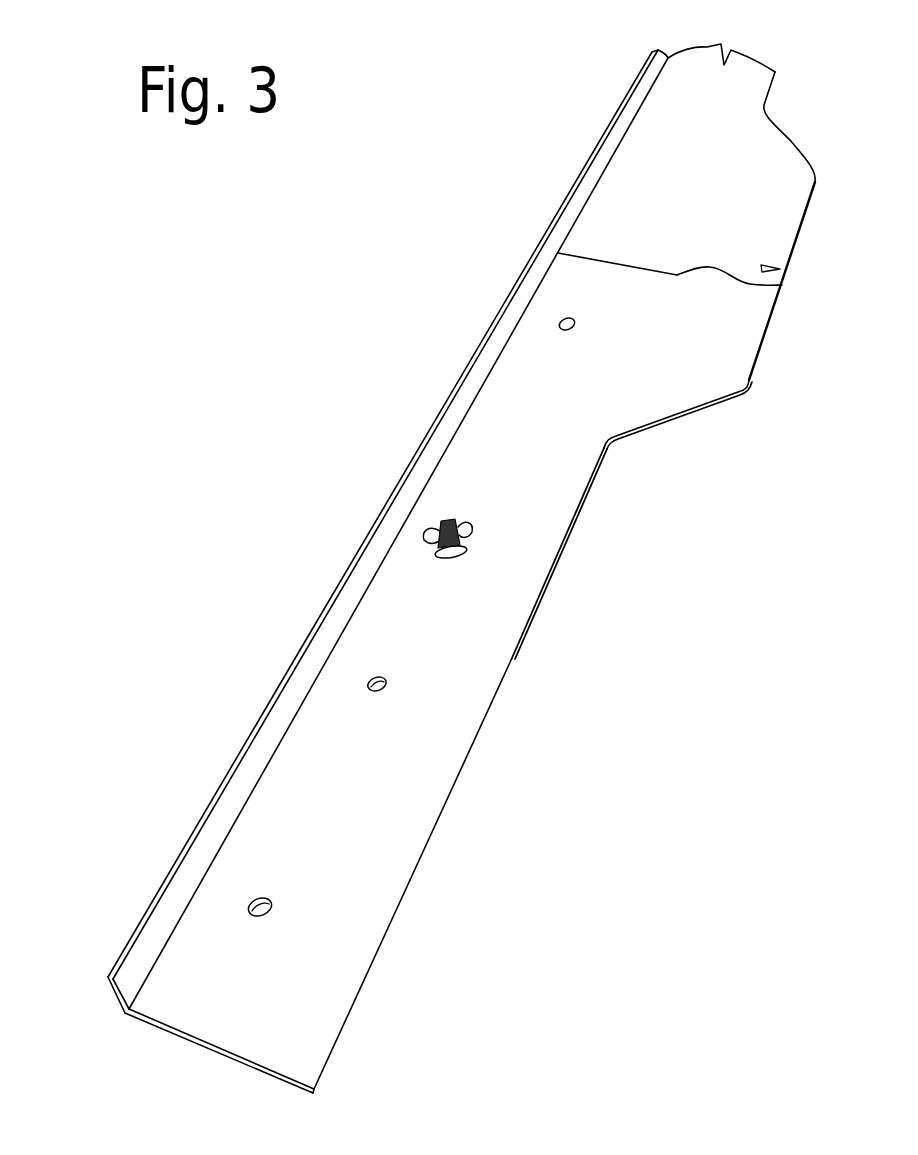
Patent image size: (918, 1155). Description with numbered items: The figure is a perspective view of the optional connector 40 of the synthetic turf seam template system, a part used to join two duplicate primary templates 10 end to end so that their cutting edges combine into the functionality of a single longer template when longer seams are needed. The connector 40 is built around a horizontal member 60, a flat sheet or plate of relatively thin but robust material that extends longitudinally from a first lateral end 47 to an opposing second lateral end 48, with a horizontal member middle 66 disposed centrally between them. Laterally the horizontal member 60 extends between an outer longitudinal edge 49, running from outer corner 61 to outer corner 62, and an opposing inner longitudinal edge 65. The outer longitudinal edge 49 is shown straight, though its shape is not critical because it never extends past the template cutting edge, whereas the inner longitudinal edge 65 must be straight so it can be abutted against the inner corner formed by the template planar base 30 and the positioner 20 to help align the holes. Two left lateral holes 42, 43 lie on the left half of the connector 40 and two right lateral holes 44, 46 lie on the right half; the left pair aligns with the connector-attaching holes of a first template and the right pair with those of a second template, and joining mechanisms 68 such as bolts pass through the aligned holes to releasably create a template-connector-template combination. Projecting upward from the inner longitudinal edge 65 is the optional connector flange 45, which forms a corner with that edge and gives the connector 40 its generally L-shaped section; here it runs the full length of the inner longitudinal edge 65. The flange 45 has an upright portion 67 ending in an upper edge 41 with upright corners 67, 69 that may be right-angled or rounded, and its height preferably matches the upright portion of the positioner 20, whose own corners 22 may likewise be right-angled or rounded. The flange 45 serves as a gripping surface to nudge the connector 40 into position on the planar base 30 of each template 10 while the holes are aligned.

The primary template 10 is at (558, 62).
The positioner 20 is at (596, 128).
The corners 22 is at (338, 586).
The planar base 30 is at (719, 435).
The connector 40 is at (186, 570).
The upper edge 41 is at (271, 698).
The connector left lateral hole 42 is at (267, 900).
The connector left lateral hole 43 is at (387, 682).
The connector right lateral hole 44 is at (457, 560).
The connector flange 45 is at (208, 796).
The connector right lateral hole 46 is at (575, 323).
The first lateral end 47 is at (203, 1047).
The second lateral end 48 is at (603, 262).
The outer longitudinal edge 49 is at (432, 833).
The horizontal member 60 is at (237, 1090).
The outer corner 61 is at (782, 285).
The outer corner 62 is at (315, 1093).
The inner longitudinal edge 65 is at (123, 1013).
The horizontal member middle 66 is at (440, 638).
The upright portion 67 is at (556, 242).
The joining mechanism 68 is at (440, 518).
The upright corner 69 is at (107, 978).